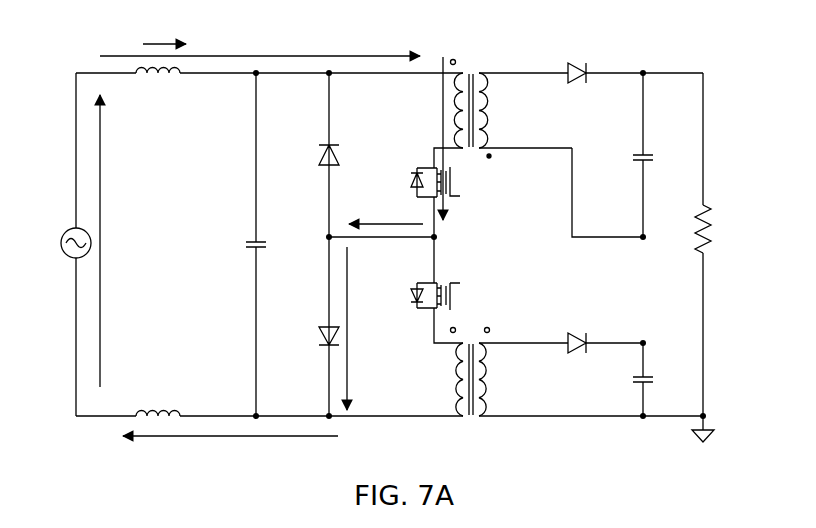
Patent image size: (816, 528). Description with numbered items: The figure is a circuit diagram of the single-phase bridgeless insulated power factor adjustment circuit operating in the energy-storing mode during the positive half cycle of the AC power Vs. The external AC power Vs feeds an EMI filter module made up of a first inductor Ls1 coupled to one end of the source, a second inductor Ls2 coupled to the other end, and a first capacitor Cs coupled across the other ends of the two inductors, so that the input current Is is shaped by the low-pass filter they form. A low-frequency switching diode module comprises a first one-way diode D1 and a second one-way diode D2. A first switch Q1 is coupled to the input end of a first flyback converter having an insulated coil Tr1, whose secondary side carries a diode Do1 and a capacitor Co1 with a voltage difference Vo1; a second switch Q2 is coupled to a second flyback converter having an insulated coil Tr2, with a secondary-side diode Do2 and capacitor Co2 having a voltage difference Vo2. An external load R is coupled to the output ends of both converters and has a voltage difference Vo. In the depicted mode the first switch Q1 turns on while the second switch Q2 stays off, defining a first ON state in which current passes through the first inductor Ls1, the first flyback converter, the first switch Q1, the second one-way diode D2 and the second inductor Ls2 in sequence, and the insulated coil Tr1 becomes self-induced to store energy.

The input current Is is at (271, 234).
The AC power Vs is at (58, 241).
The first inductor Ls1 is at (158, 88).
The second inductor Ls2 is at (158, 398).
The first capacitor Cs is at (239, 244).
The one-way diode D1 is at (312, 155).
The one-way diode D2 is at (312, 326).
The first switch Q1 is at (417, 192).
The second switch Q2 is at (415, 290).
The insulated coil Tr1 is at (471, 97).
The insulated coil Tr2 is at (473, 355).
The diode Do1 is at (569, 62).
The diode Do2 is at (569, 329).
The capacitor Co1 is at (622, 155).
The capacitor Co2 is at (622, 379).
The voltage difference Vo1 is at (669, 163).
The voltage difference Vo2 is at (673, 368).
The load R is at (689, 238).
The voltage difference Vo is at (734, 240).